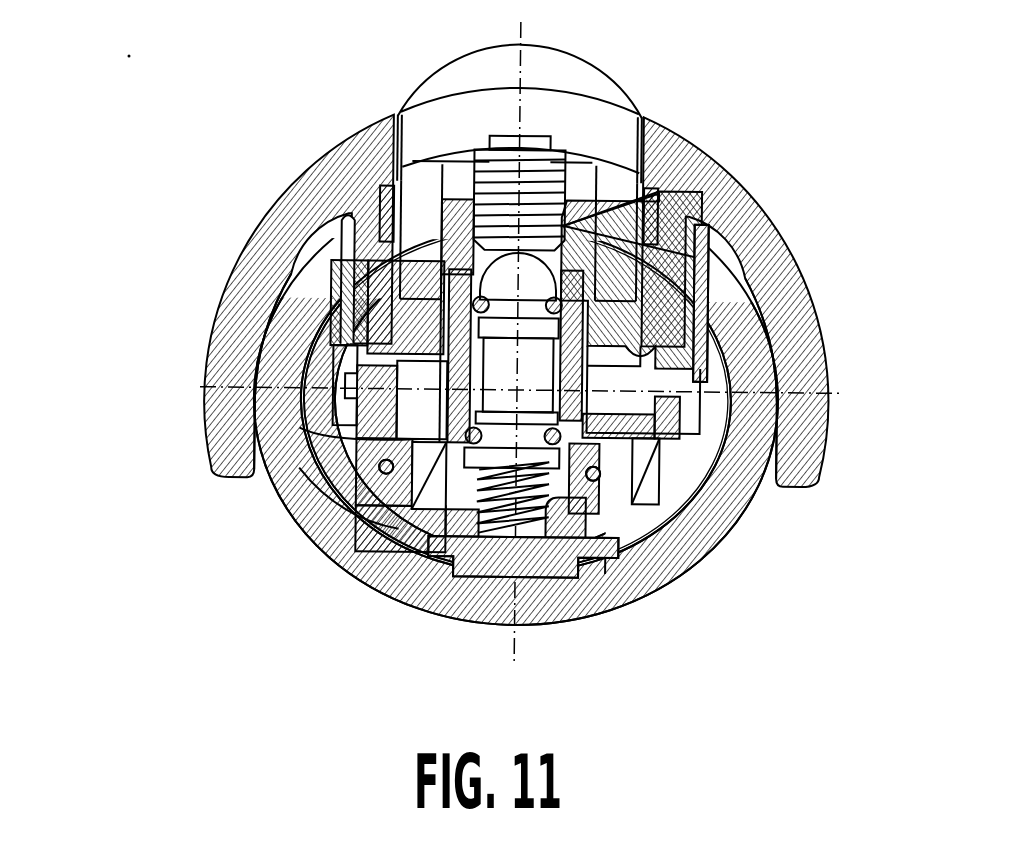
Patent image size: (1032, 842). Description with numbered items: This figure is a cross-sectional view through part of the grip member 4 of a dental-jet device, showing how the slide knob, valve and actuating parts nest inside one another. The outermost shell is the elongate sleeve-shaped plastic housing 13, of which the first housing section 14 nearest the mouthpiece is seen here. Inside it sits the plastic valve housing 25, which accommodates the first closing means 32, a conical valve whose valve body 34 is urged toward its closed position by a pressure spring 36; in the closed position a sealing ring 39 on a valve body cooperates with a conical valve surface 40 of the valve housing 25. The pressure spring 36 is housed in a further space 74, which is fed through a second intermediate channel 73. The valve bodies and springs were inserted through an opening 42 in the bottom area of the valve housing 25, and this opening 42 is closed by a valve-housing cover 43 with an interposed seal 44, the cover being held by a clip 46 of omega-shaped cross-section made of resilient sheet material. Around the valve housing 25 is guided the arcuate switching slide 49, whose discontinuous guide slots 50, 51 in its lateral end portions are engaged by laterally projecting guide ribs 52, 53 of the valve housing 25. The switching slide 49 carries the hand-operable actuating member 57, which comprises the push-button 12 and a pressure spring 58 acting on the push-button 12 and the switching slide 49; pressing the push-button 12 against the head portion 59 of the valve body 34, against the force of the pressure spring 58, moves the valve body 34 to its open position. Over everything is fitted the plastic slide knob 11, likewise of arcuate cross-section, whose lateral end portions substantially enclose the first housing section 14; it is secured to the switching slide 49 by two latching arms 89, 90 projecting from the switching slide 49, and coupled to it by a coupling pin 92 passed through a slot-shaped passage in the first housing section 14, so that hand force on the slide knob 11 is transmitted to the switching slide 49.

The grip member 4 is at (165, 150).
The slide knob 11 is at (690, 172).
The push-button 12 is at (545, 68).
The plastic housing 13 is at (764, 515).
The first housing section 14 is at (300, 470).
The valve housing 25 is at (647, 458).
The first closing means 32 is at (468, 476).
The valve body 34 is at (700, 312).
The pressure spring 36 is at (498, 560).
The sealing ring 39 is at (432, 470).
The conical valve surface 40 is at (720, 452).
The opening 42 is at (367, 443).
The valve-housing cover 43 is at (552, 552).
The seal 44 is at (395, 478).
The clip 46 is at (632, 597).
The switching slide 49 is at (602, 215).
The guide slot 50 is at (705, 350).
The guide slot 51 is at (420, 330).
The guide rib 52 is at (705, 378).
The guide rib 53 is at (340, 362).
The actuating member 57 is at (503, 151).
The pressure spring 58 is at (542, 152).
The head portion 59 is at (660, 246).
The second intermediate channel 73 is at (333, 370).
The further space 74 is at (455, 472).
The latching arm 89 is at (720, 250).
The latching arm 90 is at (360, 245).
The coupling pin 92 is at (408, 198).